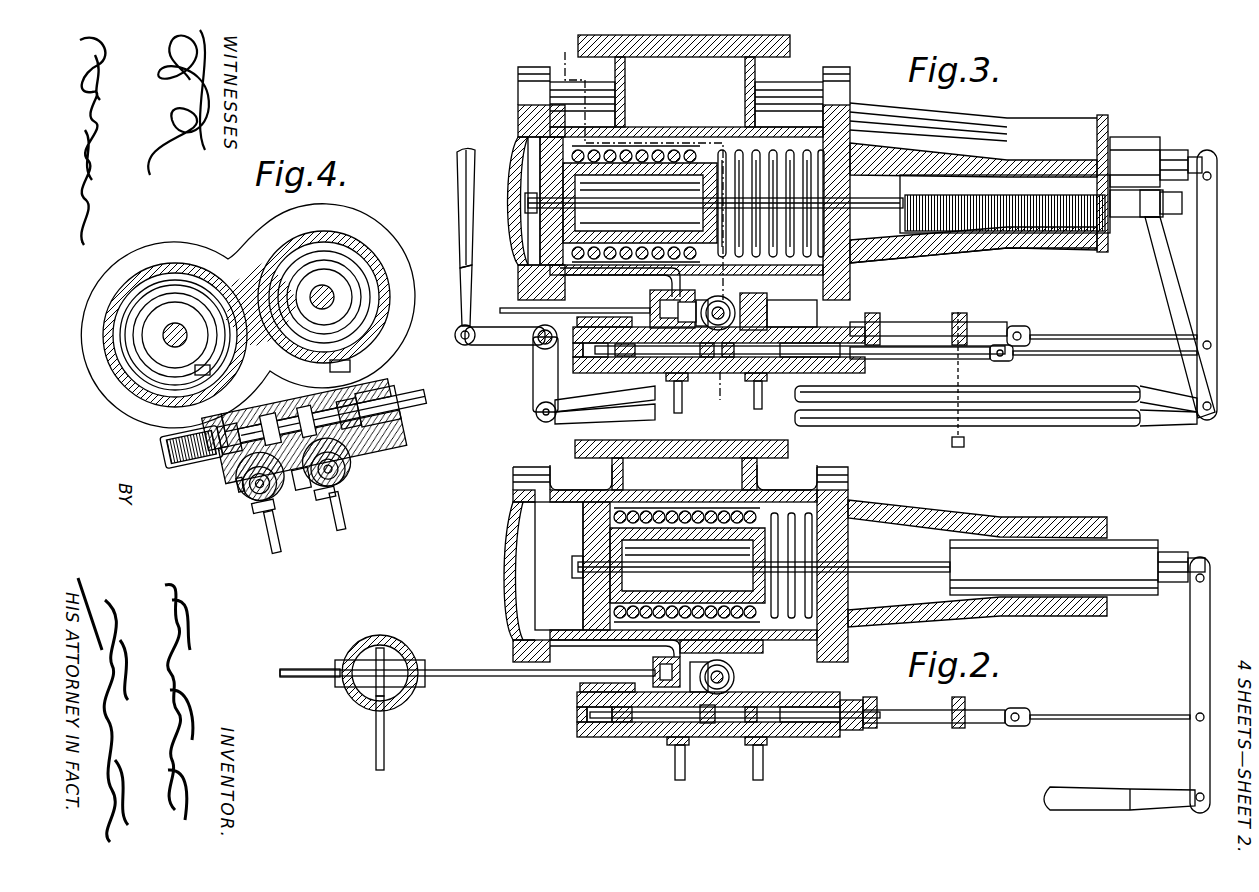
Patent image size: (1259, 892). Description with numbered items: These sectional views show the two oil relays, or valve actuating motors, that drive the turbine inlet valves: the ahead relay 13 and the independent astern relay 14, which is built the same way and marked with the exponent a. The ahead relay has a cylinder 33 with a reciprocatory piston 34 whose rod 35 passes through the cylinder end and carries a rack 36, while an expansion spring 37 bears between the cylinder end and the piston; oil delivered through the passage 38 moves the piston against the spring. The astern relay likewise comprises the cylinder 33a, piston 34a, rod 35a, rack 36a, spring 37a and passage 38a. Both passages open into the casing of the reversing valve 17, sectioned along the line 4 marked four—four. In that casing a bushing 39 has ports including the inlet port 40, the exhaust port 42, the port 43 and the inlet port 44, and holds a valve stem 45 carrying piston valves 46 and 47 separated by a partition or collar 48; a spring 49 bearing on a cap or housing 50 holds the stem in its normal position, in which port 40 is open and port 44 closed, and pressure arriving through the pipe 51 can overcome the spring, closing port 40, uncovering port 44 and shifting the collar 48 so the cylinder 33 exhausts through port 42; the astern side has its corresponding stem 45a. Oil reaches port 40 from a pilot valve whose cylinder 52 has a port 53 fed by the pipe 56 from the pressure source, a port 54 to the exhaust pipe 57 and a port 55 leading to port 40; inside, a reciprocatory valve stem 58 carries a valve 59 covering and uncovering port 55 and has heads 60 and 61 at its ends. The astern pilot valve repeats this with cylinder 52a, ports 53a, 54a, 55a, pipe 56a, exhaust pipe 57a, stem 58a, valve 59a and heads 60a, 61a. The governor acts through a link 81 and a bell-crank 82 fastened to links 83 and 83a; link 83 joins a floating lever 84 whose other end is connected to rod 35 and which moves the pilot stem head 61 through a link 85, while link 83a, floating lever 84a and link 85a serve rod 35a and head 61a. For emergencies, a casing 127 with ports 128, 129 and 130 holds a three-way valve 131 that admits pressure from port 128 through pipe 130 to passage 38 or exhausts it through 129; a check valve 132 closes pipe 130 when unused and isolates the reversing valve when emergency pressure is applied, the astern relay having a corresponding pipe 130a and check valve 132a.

In FIG. 3, the section line 4— 4 is at (635, 227).
In FIG. 3, the oil relay or actuating device 13 is at (795, 318).
In FIG. 2, the oil relay or actuating device 13 is at (805, 740).
In FIG. 4, the oil relay or actuating device 13 is at (352, 472).
In FIG. 3, the astern relay 14 is at (772, 288).
In FIG. 4, the astern relay 14 is at (246, 502).
In FIG. 2, the reversing valve 17 is at (738, 672).
In FIG. 4, the reversing valve 17 is at (362, 435).
In FIG. 2, the cylinder 33 is at (570, 495).
In FIG. 4, the cylinder 33 is at (378, 268).
In FIG. 3, the astern cylinder 33a is at (668, 110).
In FIG. 4, the astern cylinder 33a is at (120, 382).
In FIG. 2, the reciprocatory piston 34 is at (586, 530).
In FIG. 3, the piston 34a is at (567, 217).
In FIG. 2, the piston rod 35 is at (700, 570).
In FIG. 4, the piston rod 35 is at (325, 308).
In FIG. 3, the piston rod 35a is at (682, 205).
In FIG. 4, the piston rod 35a is at (190, 316).
In FIG. 3, the rack 36 is at (1135, 142).
In FIG. 2, the rack 36 is at (891, 567).
In FIG. 3, the rack 36a is at (819, 204).
In FIG. 2, the expansion spring 37 is at (700, 512).
In FIG. 4, the expansion spring 37 is at (390, 290).
In FIG. 3, the expansion spring 37a is at (738, 145).
In FIG. 4, the expansion spring 37a is at (137, 307).
In FIG. 2, the passage 38 is at (588, 642).
In FIG. 4, the passage 38 is at (332, 372).
In FIG. 3, the passage 38a is at (618, 277).
In FIG. 4, the passage 38a is at (215, 372).
In FIG. 3, the bushing 39 is at (712, 299).
In FIG. 2, the bushing 39 is at (740, 682).
In FIG. 4, the bushing 39 is at (226, 413).
In FIG. 4, the inlet port 40 is at (341, 466).
In FIG. 4, the exhaust port 42 is at (316, 504).
In FIG. 3, the port 43 is at (677, 318).
In FIG. 4, the port 43 is at (228, 480).
In FIG. 3, the inlet port 44 is at (730, 360).
In FIG. 4, the inlet port 44 is at (240, 482).
In FIG. 2, the valve stem 45 is at (700, 640).
In FIG. 4, the valve stem 45 is at (380, 436).
In FIG. 3, the valve stem 45a is at (759, 311).
In FIG. 4, the piston valve 46 is at (309, 415).
In FIG. 3, the piston valve 47 is at (746, 291).
In FIG. 4, the piston valve 47 is at (303, 390).
In FIG. 4, the partition or collar 48 is at (277, 420).
In FIG. 4, the spring 49 is at (200, 446).
In FIG. 4, the cap or housing 50 is at (160, 432).
In FIG. 4, the pipe 51 is at (414, 418).
In FIG. 2, the pilot valve cylinder 52 is at (706, 737).
In FIG. 3, the pilot valve cylinder 52a is at (708, 360).
In FIG. 2, the port 53 is at (780, 737).
In FIG. 3, the port 53a is at (780, 368).
In FIG. 2, the port 54 is at (668, 737).
In FIG. 3, the port 54a is at (672, 362).
In FIG. 2, the port 55 is at (736, 737).
In FIG. 3, the port 55a is at (748, 382).
In FIG. 4, the port 55a is at (290, 490).
In FIG. 2, the pipe 56 is at (765, 776).
In FIG. 4, the pipe 56 is at (324, 524).
In FIG. 3, the pipe 56a is at (762, 410).
In FIG. 2, the exhaust pipe 57 is at (682, 770).
In FIG. 4, the exhaust pipe 57 is at (253, 546).
In FIG. 3, the exhaust pipe 57a is at (678, 413).
In FIG. 2, the reciprocatory valve stem 58 is at (650, 735).
In FIG. 3, the reciprocatory valve stem 58a is at (640, 362).
In FIG. 2, the valve 59 is at (715, 742).
In FIG. 3, the valve 59a is at (672, 382).
In FIG. 2, the head 60 is at (620, 738).
In FIG. 3, the head 60a is at (598, 364).
In FIG. 2, the head 61 is at (856, 735).
In FIG. 3, the head 61a is at (922, 352).
In FIG. 3, the link 81 is at (458, 185).
In FIG. 3, the bell-crank 82 is at (530, 375).
In FIG. 3, the link 83 is at (1030, 382).
In FIG. 2, the link 83 is at (1098, 792).
In FIG. 3, the link 83a is at (1027, 424).
In FIG. 3, the floating lever 84 is at (1198, 283).
In FIG. 2, the floating lever 84 is at (1190, 649).
In FIG. 3, the floating lever 84a is at (1165, 262).
In FIG. 3, the link 85 is at (1098, 332).
In FIG. 2, the link 85 is at (1106, 713).
In FIG. 3, the link 85a is at (1143, 355).
In FIG. 2, the casing 127 is at (410, 700).
In FIG. 2, the port 128 is at (376, 752).
In FIG. 2, the exhaust 129 is at (322, 688).
In FIG. 2, the pipe 130 is at (462, 668).
In FIG. 3, the pipe 130a is at (502, 311).
In FIG. 2, the three-way valve 131 is at (395, 720).
In FIG. 2, the check valve 132 is at (652, 666).
In FIG. 3, the check valve 132a is at (655, 296).